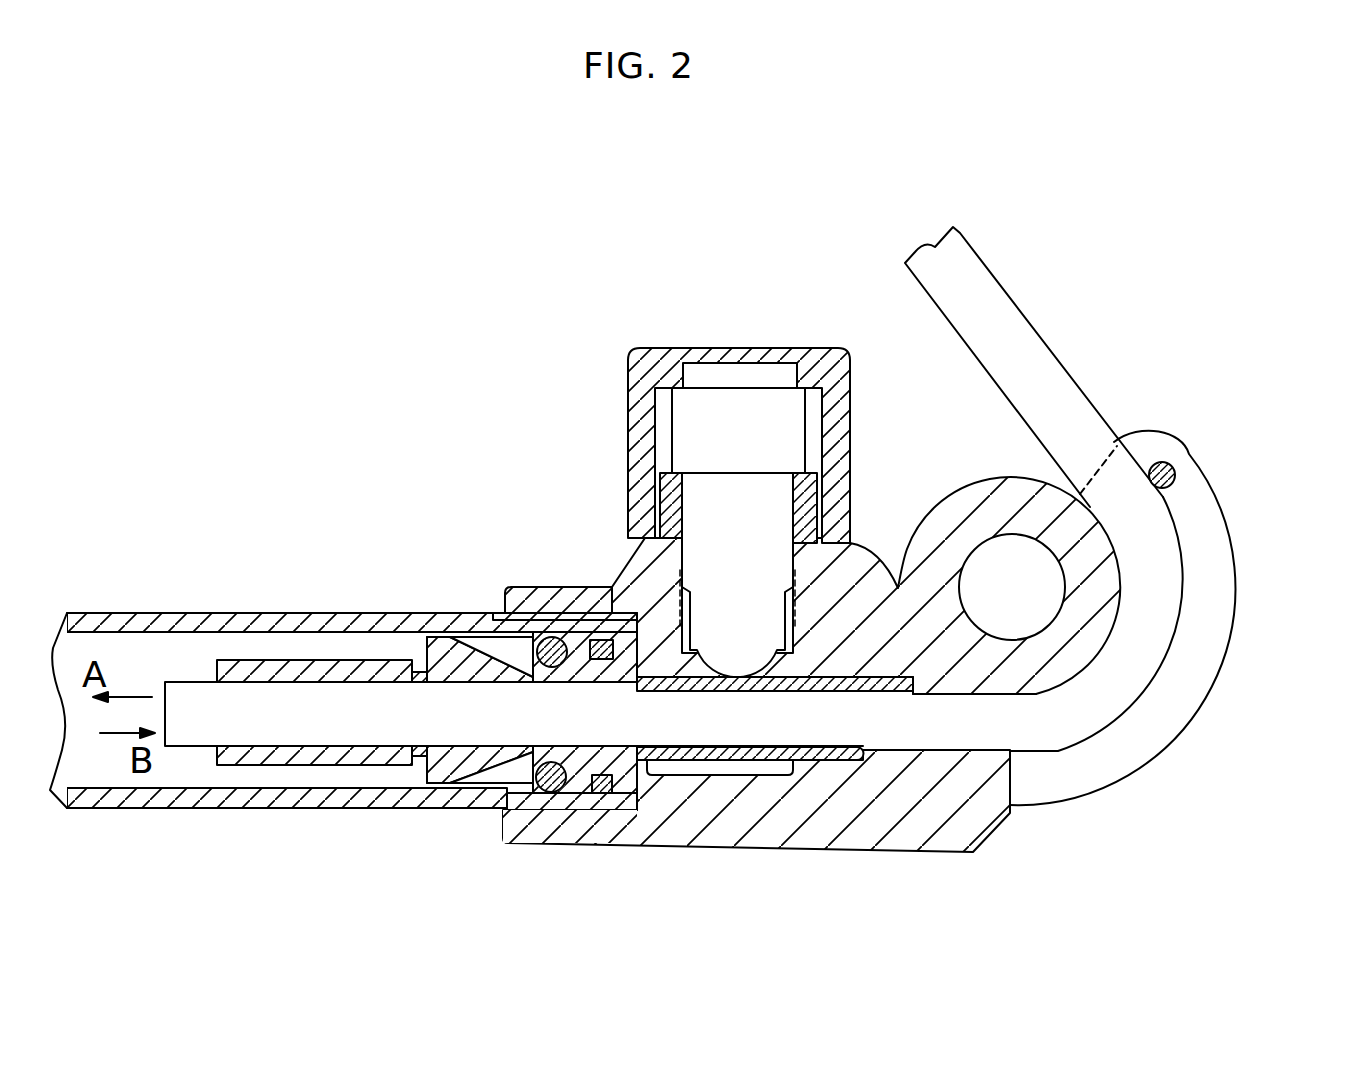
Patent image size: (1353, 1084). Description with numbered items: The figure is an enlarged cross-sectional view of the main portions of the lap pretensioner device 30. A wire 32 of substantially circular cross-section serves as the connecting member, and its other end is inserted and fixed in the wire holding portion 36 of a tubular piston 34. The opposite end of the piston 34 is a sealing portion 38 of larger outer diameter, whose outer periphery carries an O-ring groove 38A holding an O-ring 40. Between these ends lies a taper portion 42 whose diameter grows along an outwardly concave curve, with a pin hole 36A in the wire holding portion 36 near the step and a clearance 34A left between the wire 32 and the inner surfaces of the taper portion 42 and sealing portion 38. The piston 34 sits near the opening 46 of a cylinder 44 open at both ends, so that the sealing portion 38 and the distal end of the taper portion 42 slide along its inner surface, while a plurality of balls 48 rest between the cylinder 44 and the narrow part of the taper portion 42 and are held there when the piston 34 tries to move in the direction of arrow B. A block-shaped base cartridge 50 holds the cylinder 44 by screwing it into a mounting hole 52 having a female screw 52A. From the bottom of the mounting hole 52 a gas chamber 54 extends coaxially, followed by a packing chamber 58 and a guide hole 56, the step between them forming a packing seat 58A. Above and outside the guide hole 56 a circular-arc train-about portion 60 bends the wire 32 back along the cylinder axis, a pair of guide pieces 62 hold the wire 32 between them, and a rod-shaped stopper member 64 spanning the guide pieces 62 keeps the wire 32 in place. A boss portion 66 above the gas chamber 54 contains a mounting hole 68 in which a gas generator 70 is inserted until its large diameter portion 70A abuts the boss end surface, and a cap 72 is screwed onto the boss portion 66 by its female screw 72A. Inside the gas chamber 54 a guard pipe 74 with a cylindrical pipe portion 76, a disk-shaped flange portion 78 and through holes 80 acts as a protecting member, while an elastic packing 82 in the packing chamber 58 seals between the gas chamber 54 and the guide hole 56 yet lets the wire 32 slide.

The lap pretensioner device 30 is at (647, 262).
The wire 32 is at (990, 283).
The piston 34 is at (420, 650).
The clearance 34A is at (430, 760).
The wire holding portion 36 is at (281, 765).
The pin hole 36A is at (415, 765).
The sealing portion 38 is at (570, 795).
The O-ring groove 38A is at (615, 797).
The O-ring 40 is at (598, 795).
The taper portion 42 is at (485, 798).
The cylinder 44 is at (120, 800).
The opening 46 is at (612, 623).
The balls 48 is at (520, 830).
The base cartridge 50 is at (953, 843).
The mounting hole 52 is at (567, 620).
The female screw 52A is at (535, 612).
The gas chamber 54 is at (777, 790).
The guide hole 56 is at (912, 746).
The packing chamber 58 is at (812, 790).
The packing seat 58A is at (866, 760).
The train-about portion 60 is at (1113, 606).
The guide pieces 62 is at (1213, 548).
The stopper member 64 is at (1170, 462).
The boss portion 66 is at (807, 517).
The mounting hole 68 is at (741, 557).
The gas generator 70 is at (745, 497).
The large diameter portion 70A is at (770, 425).
The cap 72 is at (805, 350).
The female screw 72A is at (842, 478).
The guard pipe 74 is at (735, 777).
The pipe portion 76 is at (700, 777).
The flange portion 78 is at (657, 800).
The through holes 80 is at (641, 748).
The packing 82 is at (907, 680).